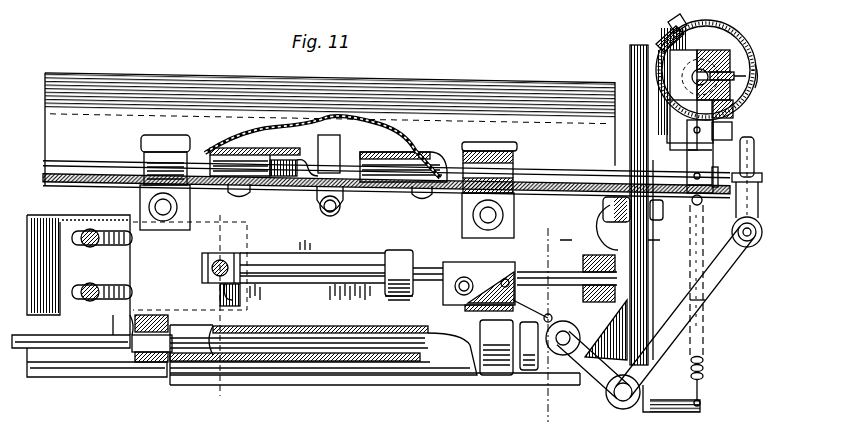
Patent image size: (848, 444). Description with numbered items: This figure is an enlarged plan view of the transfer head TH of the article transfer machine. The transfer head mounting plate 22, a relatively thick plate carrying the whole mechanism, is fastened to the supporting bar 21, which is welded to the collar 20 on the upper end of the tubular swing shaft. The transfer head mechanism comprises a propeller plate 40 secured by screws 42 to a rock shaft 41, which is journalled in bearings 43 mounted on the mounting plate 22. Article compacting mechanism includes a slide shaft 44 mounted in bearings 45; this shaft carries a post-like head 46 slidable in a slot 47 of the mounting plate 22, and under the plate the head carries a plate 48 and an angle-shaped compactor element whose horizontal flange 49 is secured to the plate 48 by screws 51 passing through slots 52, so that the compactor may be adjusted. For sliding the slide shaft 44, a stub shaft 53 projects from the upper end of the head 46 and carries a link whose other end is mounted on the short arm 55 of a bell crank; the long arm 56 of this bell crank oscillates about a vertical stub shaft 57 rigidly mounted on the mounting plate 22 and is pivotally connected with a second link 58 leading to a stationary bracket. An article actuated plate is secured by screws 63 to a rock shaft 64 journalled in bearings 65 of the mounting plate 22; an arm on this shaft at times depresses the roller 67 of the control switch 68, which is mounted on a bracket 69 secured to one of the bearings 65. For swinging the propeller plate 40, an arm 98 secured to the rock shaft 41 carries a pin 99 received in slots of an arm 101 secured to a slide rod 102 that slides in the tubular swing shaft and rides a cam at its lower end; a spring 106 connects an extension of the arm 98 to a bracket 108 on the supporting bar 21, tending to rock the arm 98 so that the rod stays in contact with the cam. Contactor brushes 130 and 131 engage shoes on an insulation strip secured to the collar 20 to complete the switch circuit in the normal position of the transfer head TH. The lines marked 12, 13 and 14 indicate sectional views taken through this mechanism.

The transfer head TH is at (511, 68).
The propeller plate 40 is at (144, 102).
The bearings 43 is at (165, 152).
The rock shaft 41 is at (229, 160).
The transfer head mounting plate 22 is at (310, 164).
The screws 42 is at (237, 188).
The horizontal flange 49 is at (53, 215).
The screws 51 is at (88, 230).
The slots 52 is at (84, 242).
The plate 48 is at (122, 315).
The bearings 65 is at (148, 360).
The stub shaft 53 is at (204, 276).
The slot 47 is at (286, 284).
The post-like head 46 is at (240, 308).
The bracket 69 is at (452, 267).
The control switch 68 is at (522, 284).
The roller 67 is at (545, 314).
The bearings 45 is at (392, 298).
The slide shaft 44 is at (428, 283).
The screws 63 is at (345, 331).
The rock shaft 64 is at (297, 348).
The section line 13- 13 is at (208, 212).
The section line 12- 12 is at (527, 232).
The section line 14- 14 is at (572, 240).
The supporting bar 21 is at (652, 290).
The slide rod 102 is at (725, 58).
The arm 101 is at (731, 62).
The contactor brush 130 is at (749, 75).
The collar 20 is at (678, 25).
The contactor brush 131 is at (658, 34).
The arm 98 is at (690, 160).
The pin 99 is at (733, 128).
The second link 58 is at (756, 141).
The long arm 56 is at (718, 288).
The short arm 55 is at (566, 355).
The vertical stub shaft 57 is at (623, 398).
The bracket 108 is at (680, 410).
The spring 106 is at (704, 372).